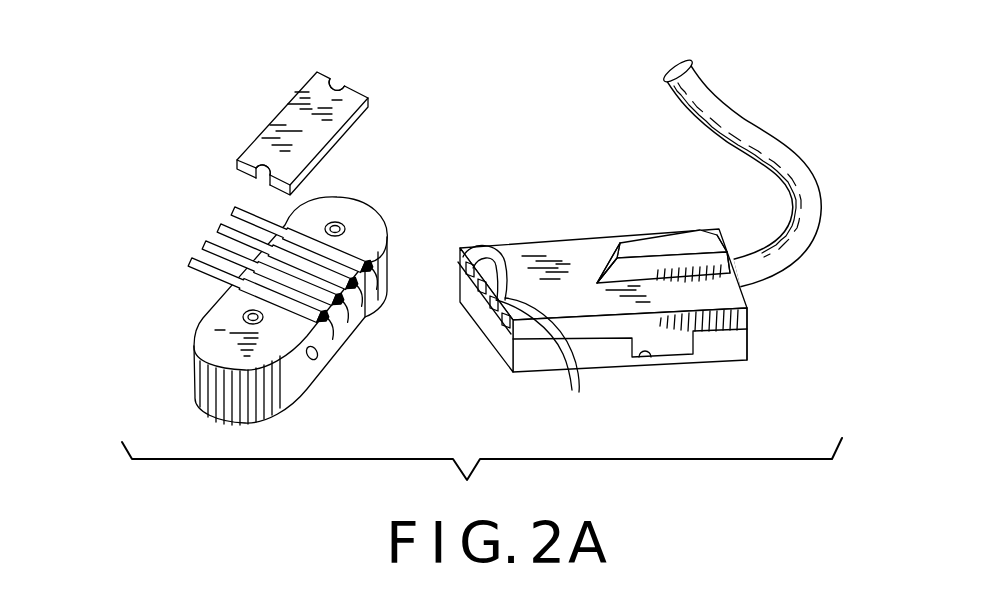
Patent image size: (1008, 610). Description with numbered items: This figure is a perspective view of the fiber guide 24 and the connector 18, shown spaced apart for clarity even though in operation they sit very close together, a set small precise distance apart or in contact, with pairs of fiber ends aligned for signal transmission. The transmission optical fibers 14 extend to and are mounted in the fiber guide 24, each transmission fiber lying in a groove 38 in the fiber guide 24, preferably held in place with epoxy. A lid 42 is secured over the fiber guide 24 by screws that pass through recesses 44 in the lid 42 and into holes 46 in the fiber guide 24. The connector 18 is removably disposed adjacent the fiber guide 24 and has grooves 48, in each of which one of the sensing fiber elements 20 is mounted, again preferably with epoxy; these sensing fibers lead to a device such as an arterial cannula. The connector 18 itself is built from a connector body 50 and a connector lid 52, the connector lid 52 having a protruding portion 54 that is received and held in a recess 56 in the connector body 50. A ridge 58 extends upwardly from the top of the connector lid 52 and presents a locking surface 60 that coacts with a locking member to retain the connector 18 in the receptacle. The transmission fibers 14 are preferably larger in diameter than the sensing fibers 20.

The transmission optical fibers 14 is at (200, 251).
The connector 18 is at (503, 240).
The sensing fiber elements 20 is at (580, 399).
The fiber guide 24 is at (257, 407).
The groove 38 is at (344, 315).
The lid 42 is at (289, 98).
The recesses 44 is at (285, 156).
The holes 46 is at (240, 318).
The grooves 48 is at (504, 342).
The connector body 50 is at (724, 348).
The connector lid 52 is at (745, 318).
The protruding portion 54 is at (674, 344).
The recess 56 is at (653, 362).
The ridge 58 is at (706, 250).
The locking surface 60 is at (603, 256).